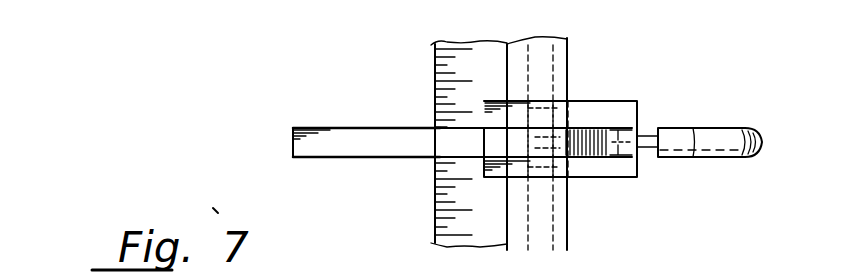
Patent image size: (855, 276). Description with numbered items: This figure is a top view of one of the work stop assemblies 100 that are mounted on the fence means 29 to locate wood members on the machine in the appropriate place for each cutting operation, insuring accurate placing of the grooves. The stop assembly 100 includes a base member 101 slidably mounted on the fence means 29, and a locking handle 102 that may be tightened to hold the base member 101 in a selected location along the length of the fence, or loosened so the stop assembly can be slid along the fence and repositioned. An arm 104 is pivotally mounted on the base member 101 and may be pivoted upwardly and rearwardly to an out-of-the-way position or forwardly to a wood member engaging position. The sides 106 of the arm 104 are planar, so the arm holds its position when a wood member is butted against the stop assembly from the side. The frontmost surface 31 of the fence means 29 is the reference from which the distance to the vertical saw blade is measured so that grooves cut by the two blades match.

The fence means 29 is at (568, 53).
The frontmost surface 31 is at (434, 74).
The work stop assembly 100 is at (611, 189).
The base member 101 is at (616, 106).
The locking handle 102 is at (713, 128).
The arm 104 is at (355, 152).
The sides 106 is at (350, 127).